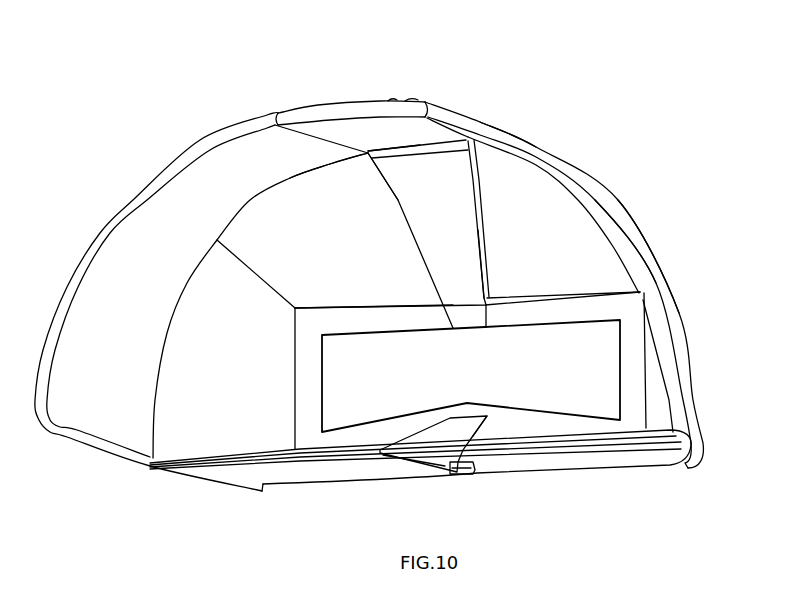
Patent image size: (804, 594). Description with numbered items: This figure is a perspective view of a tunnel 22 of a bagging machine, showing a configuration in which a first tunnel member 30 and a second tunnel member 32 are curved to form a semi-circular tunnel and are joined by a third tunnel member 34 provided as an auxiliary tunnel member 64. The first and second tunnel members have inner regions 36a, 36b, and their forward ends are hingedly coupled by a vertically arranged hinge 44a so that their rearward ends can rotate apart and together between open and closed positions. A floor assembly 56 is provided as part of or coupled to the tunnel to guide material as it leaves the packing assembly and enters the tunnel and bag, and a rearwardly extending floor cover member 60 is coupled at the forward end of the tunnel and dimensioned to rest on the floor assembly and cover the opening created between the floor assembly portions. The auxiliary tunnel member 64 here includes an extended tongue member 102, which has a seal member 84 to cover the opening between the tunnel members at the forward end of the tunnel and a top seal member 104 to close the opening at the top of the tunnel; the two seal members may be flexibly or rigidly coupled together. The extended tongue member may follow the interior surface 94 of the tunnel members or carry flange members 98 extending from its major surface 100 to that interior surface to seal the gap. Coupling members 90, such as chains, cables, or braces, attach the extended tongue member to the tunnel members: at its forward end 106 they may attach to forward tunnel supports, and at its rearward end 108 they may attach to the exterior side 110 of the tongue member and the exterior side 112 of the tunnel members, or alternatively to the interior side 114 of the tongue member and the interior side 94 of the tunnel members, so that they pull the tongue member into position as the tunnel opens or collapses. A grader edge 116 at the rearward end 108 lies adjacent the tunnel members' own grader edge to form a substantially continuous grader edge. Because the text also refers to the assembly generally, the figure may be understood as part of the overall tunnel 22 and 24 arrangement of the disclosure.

The tunnel 22 is at (684, 110).
The seat back 24 is at (678, 163).
The first tunnel member 30 is at (199, 139).
The second tunnel member 32 is at (655, 241).
The third tunnel member 34 is at (386, 245).
The inner region 36a is at (252, 110).
The inner region 36b is at (460, 113).
The hinge 44a is at (466, 472).
The floor assembly 56 is at (338, 477).
The floor cover member 60 is at (437, 435).
The auxiliary tunnel member 64 is at (386, 208).
The seal member 84 is at (456, 232).
The coupling members 90 is at (423, 98).
The interior surface 94 is at (562, 249).
The flange member 98 is at (480, 213).
The major surface 100 is at (474, 282).
The extended tongue member 102 is at (364, 185).
The top seal member 104 is at (357, 139).
The forward end 106 is at (481, 178).
The rearward end 108 is at (293, 140).
The exterior side 110 is at (398, 87).
The exterior side 112 is at (514, 124).
The interior side 114 is at (420, 133).
The grader edge 116 is at (335, 110).